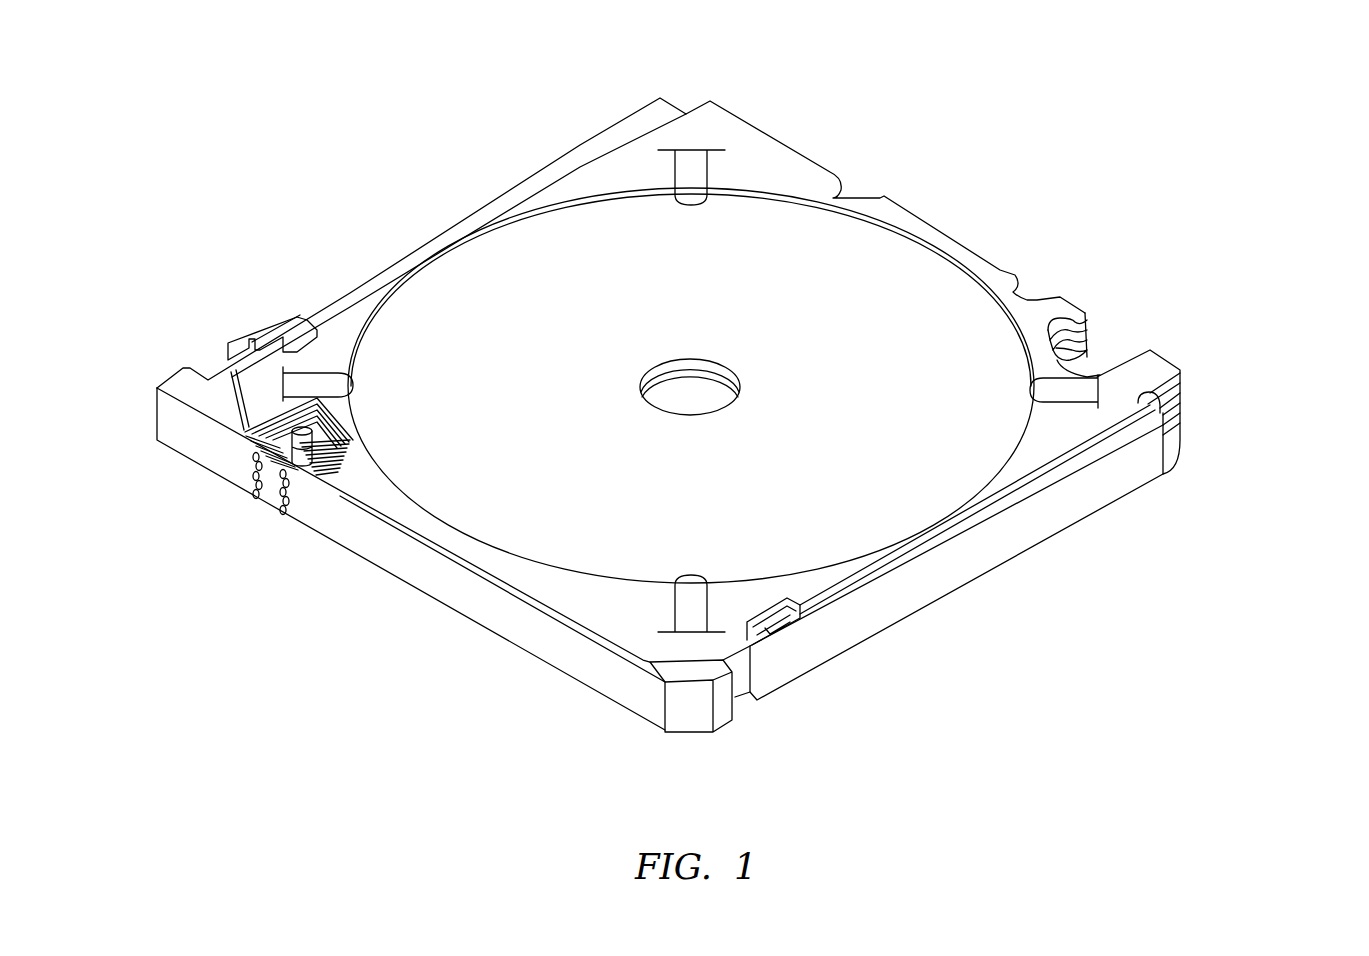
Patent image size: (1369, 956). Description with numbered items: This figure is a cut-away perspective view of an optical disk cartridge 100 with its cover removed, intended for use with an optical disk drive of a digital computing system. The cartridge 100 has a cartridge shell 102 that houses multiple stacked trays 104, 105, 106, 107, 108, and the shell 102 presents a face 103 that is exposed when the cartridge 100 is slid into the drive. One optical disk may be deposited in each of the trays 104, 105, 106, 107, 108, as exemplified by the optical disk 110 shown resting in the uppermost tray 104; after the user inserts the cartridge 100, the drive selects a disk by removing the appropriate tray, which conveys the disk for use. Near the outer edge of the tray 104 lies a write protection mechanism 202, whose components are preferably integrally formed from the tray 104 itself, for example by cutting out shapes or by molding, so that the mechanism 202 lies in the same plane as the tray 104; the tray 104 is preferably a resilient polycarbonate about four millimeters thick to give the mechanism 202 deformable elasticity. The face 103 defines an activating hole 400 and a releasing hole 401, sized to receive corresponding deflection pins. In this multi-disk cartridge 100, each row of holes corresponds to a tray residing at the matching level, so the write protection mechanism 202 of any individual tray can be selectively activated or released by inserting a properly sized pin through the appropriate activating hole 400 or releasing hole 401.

The optical disk cartridge 100 is at (862, 92).
The cartridge shell 102 is at (890, 607).
The face 103 is at (600, 665).
The tray 104 is at (992, 261).
The tray 105 is at (1090, 322).
The tray 106 is at (1090, 332).
The tray 107 is at (1090, 341).
The tray 108 is at (1090, 350).
The optical disk 110 is at (872, 398).
The write protection mechanism 202 is at (323, 366).
The activating hole 400 is at (281, 503).
The releasing hole 401 is at (250, 484).